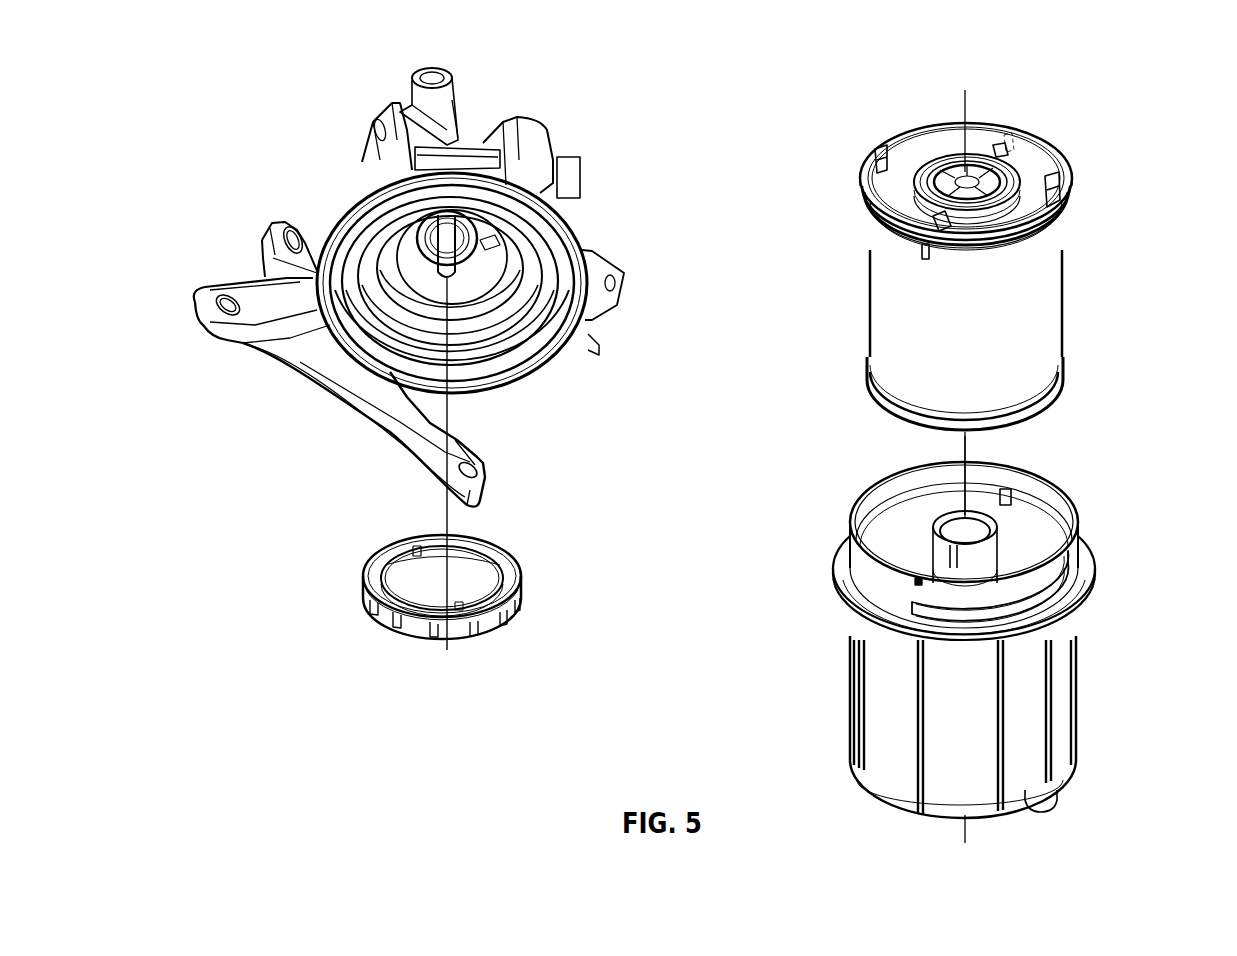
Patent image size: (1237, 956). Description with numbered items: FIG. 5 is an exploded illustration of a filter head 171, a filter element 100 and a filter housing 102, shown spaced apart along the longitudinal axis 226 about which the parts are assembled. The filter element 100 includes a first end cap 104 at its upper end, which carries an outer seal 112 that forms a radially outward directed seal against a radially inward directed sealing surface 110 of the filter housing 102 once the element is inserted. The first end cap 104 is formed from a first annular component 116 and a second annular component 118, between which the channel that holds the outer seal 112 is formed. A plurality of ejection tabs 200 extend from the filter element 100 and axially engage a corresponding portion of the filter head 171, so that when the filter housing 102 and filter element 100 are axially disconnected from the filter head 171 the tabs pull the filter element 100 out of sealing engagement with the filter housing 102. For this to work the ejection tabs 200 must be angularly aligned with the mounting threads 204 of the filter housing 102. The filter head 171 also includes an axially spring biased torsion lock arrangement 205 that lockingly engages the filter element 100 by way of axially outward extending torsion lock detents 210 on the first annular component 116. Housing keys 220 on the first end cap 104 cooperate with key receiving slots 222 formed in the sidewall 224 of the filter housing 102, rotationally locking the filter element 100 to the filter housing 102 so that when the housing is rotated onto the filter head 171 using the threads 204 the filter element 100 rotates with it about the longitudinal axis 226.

The filter element 100 is at (1136, 95).
The filter housing 102 is at (1094, 710).
The first end cap 104 is at (892, 190).
The sealing surface 110 is at (1067, 503).
The outer seal 112 is at (1067, 210).
The first annular component 116 is at (1073, 193).
The second annular component 118 is at (1020, 252).
The filter head 171 is at (560, 119).
The ejection tabs 200 is at (882, 153).
The mounting threads 204 is at (1065, 587).
The torsion lock arrangement 205 is at (510, 563).
The torsion lock detents 210 is at (940, 222).
The housing keys 220 is at (922, 266).
The key receiving slots 222 is at (1012, 486).
The sidewall 224 is at (1078, 522).
The longitudinal axis 226 is at (964, 446).